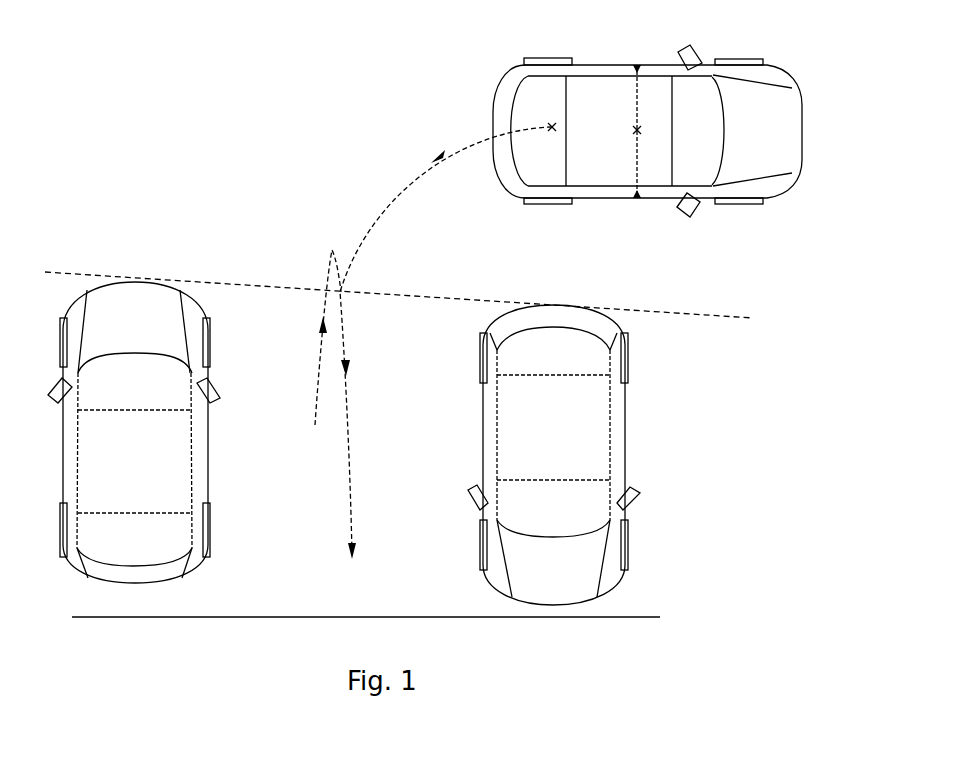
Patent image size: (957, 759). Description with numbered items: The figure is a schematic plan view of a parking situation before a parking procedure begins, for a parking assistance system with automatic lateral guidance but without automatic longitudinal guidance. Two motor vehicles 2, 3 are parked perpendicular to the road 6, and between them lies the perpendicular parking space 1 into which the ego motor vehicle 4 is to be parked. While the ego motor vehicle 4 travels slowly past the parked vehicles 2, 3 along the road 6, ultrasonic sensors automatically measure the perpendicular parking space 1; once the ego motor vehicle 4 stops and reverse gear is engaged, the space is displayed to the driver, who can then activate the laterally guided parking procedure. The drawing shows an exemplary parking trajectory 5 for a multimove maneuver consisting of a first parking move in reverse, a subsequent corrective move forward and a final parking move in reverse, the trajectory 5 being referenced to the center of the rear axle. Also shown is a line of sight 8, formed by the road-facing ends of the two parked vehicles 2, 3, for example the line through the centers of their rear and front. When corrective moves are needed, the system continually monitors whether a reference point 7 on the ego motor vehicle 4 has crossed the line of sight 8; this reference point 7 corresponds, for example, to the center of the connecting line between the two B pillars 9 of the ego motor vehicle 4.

The perpendicular parking space 1 is at (366, 545).
The parked motor vehicle 2 is at (90, 576).
The parked motor vehicle 3 is at (620, 447).
The ego motor vehicle 4 is at (577, 200).
The parking trajectory 5 is at (453, 150).
The road 6 is at (313, 288).
The reference point 7 is at (641, 130).
The line of sight 8 is at (685, 313).
The B pillars 9 is at (637, 66).